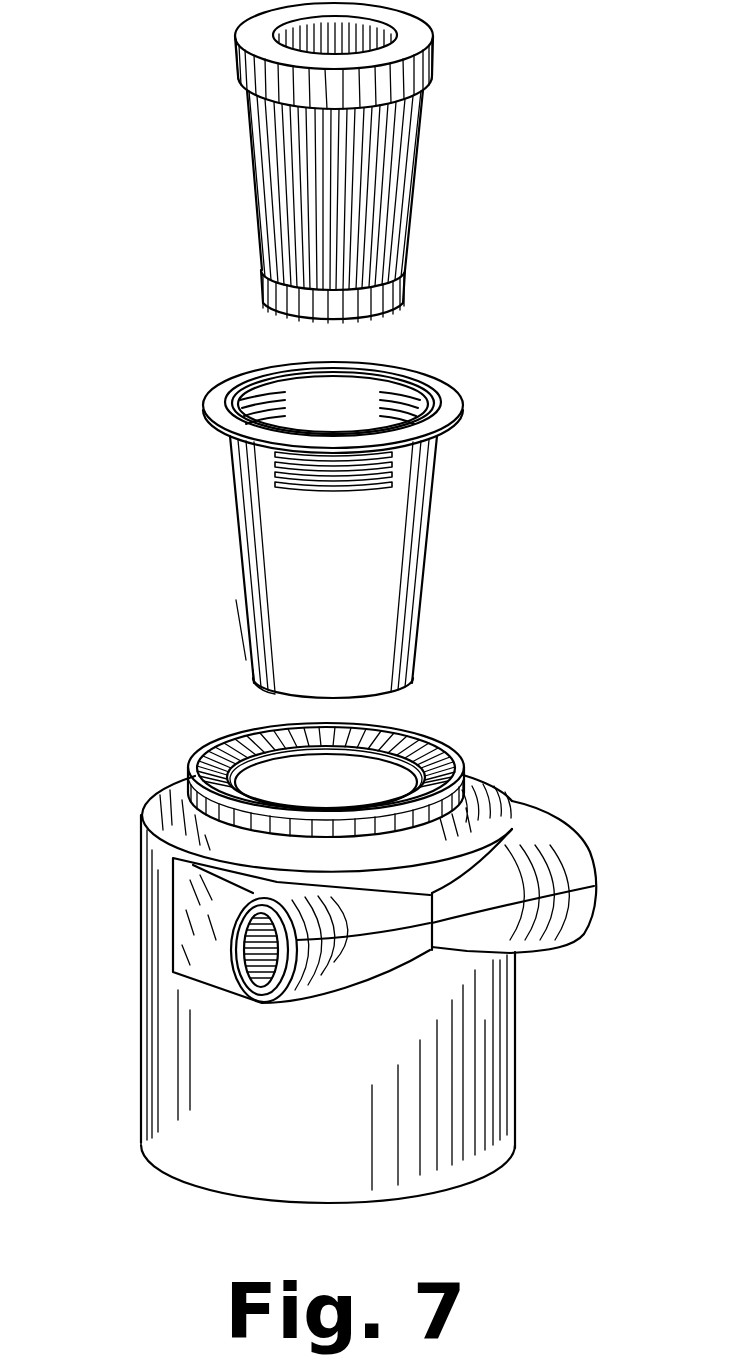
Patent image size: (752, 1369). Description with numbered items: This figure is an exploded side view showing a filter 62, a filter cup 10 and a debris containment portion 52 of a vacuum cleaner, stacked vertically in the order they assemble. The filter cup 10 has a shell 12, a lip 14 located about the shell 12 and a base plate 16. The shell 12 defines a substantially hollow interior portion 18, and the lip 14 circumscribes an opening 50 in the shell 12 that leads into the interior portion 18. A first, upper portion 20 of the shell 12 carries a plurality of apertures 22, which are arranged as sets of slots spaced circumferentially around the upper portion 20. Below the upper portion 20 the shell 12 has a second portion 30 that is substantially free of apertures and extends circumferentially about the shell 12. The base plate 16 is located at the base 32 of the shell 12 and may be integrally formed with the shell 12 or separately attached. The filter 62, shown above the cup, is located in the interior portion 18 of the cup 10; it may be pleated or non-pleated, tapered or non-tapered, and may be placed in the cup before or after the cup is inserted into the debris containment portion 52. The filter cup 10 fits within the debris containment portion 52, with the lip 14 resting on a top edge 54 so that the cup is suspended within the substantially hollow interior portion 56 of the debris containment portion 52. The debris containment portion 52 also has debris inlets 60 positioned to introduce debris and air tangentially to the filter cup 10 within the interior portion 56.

The filter cup 10 is at (316, 514).
The shell 12 is at (368, 550).
The lip 14 is at (205, 400).
The base plate 16 is at (380, 690).
The interior portion 18 is at (362, 390).
The upper portion 20 is at (230, 513).
The apertures 22 is at (402, 476).
The second portion 30 is at (244, 628).
The base 32 is at (250, 681).
The opening 50 is at (290, 370).
The debris containment portion 52 is at (337, 989).
The top edge 54 is at (207, 762).
The interior portion 56 is at (238, 1115).
The debris inlet 60 is at (213, 957).
The filter 62 is at (414, 176).